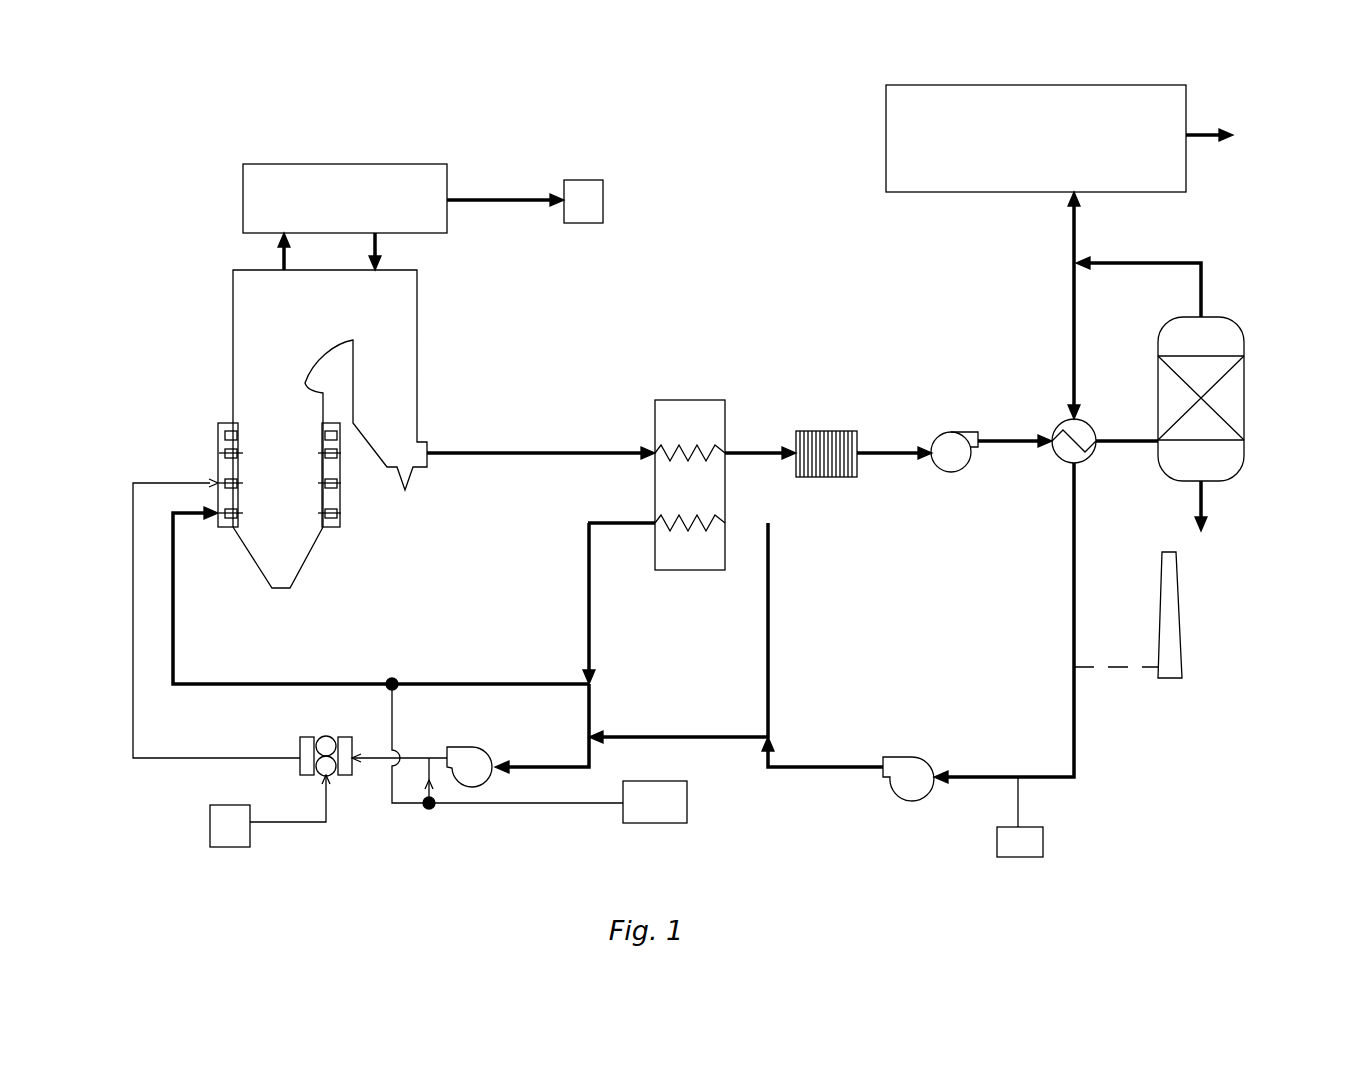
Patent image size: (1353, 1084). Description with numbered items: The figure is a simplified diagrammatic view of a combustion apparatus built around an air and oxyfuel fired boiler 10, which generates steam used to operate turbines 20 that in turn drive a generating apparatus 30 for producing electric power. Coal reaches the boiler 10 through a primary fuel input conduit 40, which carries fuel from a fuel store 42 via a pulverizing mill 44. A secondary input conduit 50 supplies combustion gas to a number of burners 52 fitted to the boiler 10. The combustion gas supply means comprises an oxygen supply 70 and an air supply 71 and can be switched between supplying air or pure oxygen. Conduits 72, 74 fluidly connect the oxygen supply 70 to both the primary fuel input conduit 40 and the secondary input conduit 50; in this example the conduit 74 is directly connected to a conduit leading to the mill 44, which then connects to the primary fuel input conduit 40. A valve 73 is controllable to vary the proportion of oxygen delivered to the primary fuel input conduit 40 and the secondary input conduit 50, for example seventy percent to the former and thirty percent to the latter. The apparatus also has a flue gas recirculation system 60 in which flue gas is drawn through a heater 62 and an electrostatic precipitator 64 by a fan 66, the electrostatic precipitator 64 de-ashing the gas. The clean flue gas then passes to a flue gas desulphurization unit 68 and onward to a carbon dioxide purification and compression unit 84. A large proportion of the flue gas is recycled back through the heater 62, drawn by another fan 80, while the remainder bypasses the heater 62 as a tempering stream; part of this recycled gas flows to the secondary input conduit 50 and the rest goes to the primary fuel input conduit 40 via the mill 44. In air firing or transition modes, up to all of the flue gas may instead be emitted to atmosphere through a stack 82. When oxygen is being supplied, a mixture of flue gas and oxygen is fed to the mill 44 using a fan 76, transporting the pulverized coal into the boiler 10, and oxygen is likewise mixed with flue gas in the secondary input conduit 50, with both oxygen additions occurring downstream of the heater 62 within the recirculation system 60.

The boiler 10 is at (190, 311).
The turbines 20 is at (325, 163).
The generating apparatus 30 is at (582, 180).
The primary fuel input conduit 40 is at (172, 480).
The fuel store 42 is at (209, 825).
The pulverizing mill 44 is at (342, 777).
The secondary input conduit 50 is at (175, 618).
The burners 52 is at (328, 517).
The flue gas recirculation system 60 is at (1145, 775).
The heater 62 is at (702, 398).
The electrostatic precipitator 64 is at (827, 428).
The fan 66 is at (958, 432).
The flue gas desulphurization unit 68 is at (1244, 449).
The oxygen supply 70 is at (687, 800).
The air supply 71 is at (1043, 843).
The conduit 72 is at (390, 715).
The valve 73 is at (430, 810).
The conduit 74 is at (435, 772).
The fan 76 is at (490, 753).
The fan 80 is at (912, 799).
The stack 82 is at (1183, 633).
The carbon dioxide purification and compression unit 84 is at (1188, 165).